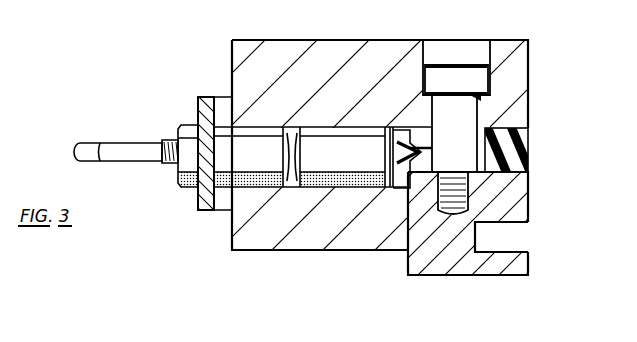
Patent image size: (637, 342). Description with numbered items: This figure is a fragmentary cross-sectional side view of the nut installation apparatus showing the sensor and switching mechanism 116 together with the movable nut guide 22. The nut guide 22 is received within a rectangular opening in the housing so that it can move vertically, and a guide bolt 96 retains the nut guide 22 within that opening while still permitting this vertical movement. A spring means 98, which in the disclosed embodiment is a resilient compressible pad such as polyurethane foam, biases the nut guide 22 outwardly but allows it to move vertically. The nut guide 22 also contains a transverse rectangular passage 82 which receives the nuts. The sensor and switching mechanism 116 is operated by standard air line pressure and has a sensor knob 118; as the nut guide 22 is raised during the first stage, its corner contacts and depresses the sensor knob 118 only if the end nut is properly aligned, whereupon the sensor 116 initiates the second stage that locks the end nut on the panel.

The sensor and switching mechanism 116 is at (272, 34).
The guide bolt 96 is at (447, 70).
The sensor knob 118 is at (402, 146).
The spring means 98 is at (523, 156).
The transverse rectangular passage 82 is at (513, 237).
The nut guide 22 is at (437, 262).